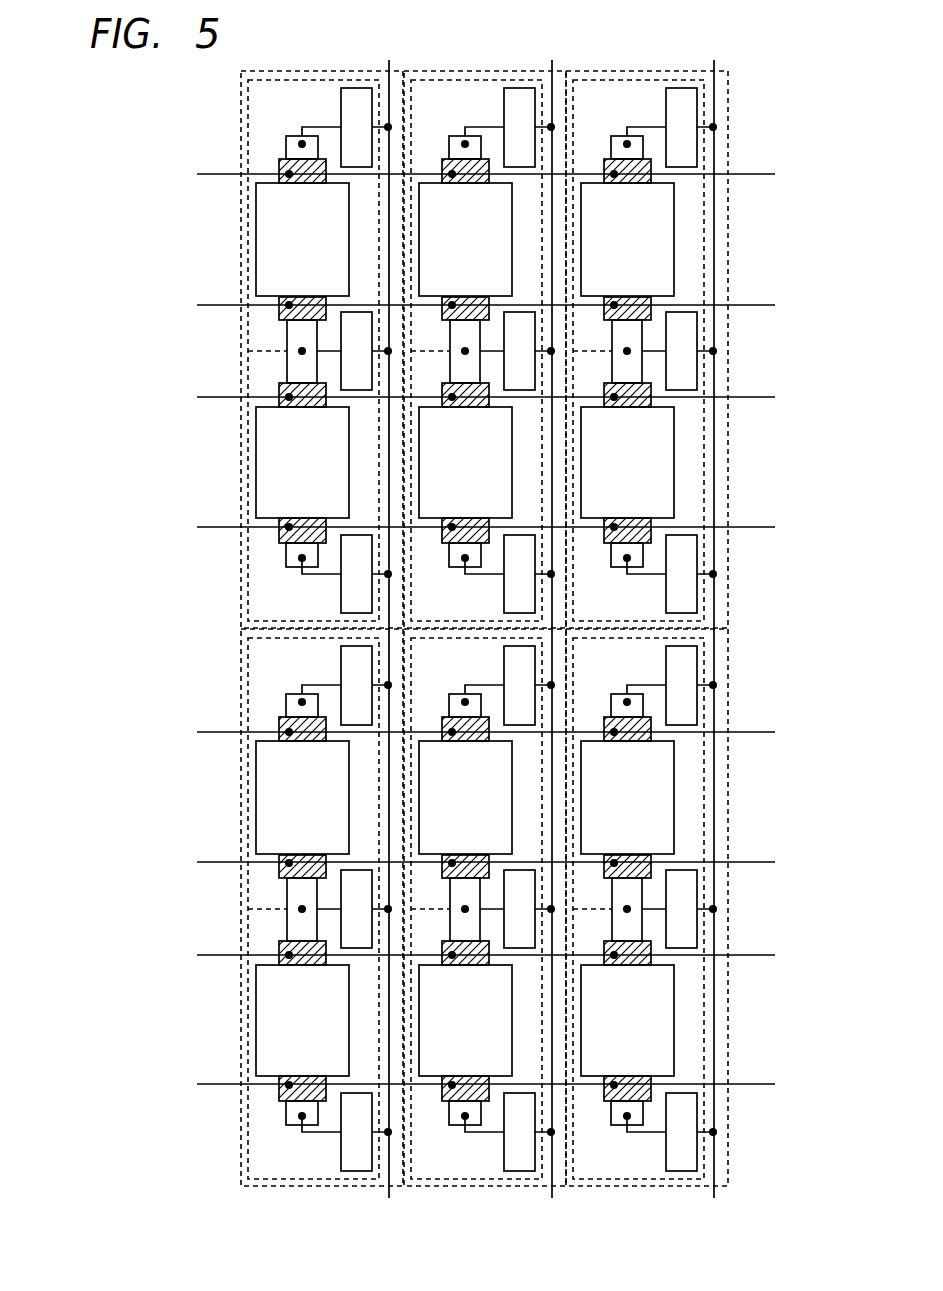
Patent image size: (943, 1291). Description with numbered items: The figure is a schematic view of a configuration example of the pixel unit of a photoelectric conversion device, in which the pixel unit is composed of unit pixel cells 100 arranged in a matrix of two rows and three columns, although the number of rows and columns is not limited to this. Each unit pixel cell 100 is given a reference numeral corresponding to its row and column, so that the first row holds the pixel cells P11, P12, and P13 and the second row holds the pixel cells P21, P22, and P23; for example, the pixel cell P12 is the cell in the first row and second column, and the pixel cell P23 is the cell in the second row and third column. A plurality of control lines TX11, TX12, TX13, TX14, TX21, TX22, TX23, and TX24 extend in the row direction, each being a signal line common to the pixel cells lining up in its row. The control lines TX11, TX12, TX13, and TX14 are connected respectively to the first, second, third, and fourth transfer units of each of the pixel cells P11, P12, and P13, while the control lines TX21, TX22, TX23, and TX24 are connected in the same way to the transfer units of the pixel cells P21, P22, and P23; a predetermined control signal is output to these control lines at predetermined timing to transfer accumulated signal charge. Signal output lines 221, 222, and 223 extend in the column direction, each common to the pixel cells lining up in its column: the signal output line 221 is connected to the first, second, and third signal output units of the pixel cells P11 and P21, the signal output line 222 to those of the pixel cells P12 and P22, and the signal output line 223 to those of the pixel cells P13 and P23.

The unit pixel cell 100 is at (728, 136).
The pixel cell P11 is at (310, 72).
The pixel cell P12 is at (474, 70).
The pixel cell P13 is at (637, 70).
The pixel cell P21 is at (275, 1186).
The pixel cell P22 is at (439, 1185).
The pixel cell P23 is at (602, 1185).
The signal output line 221 is at (389, 1197).
The signal output line 222 is at (552, 1197).
The signal output line 223 is at (714, 1197).
The control line TX11 is at (459, 174).
The control line TX12 is at (459, 305).
The control line TX13 is at (459, 527).
The control line TX14 is at (459, 397).
The control line TX21 is at (459, 732).
The control line TX22 is at (459, 862).
The control line TX23 is at (459, 1084).
The control line TX24 is at (459, 955).